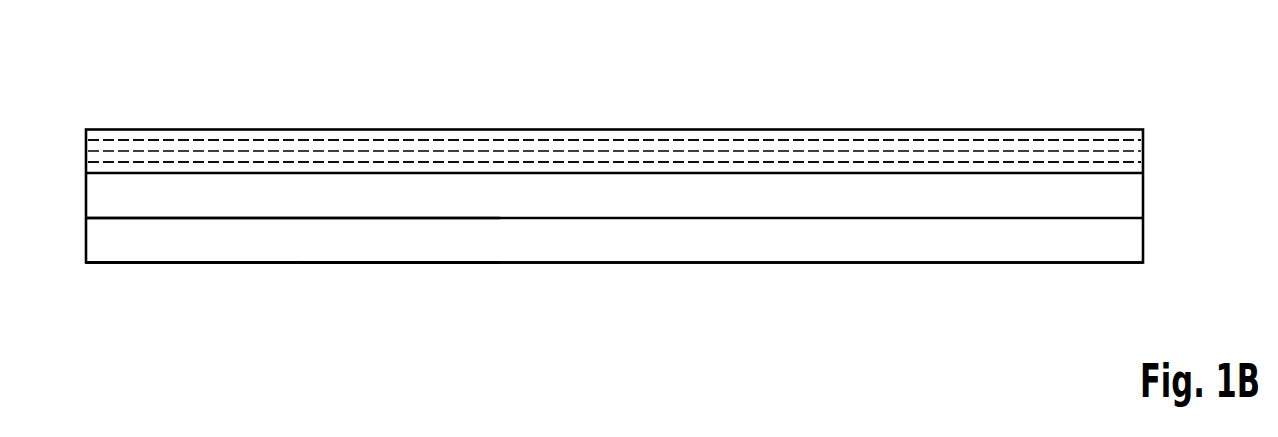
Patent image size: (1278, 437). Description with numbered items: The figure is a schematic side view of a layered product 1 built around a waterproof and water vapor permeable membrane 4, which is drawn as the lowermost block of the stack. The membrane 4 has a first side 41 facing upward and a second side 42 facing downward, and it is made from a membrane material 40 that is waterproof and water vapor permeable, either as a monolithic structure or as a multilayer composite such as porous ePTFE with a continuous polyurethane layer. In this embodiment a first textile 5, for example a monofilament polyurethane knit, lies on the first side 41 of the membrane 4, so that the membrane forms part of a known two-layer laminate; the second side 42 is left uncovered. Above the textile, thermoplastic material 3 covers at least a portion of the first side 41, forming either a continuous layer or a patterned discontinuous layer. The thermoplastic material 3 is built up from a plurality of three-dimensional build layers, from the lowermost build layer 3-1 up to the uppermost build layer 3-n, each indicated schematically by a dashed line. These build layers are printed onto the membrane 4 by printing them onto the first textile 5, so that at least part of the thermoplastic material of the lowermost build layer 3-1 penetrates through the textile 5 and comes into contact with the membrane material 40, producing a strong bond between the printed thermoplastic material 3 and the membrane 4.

The layered product 1 is at (82, 75).
The thermoplastic material 3 is at (110, 190).
The three-dimensional build layer 3-n is at (1143, 133).
The lowermost three-dimensional build layer 3-1 is at (1143, 168).
The first textile 5 is at (86, 193).
The waterproof and water vapor permeable membrane 4 is at (86, 238).
The first side 41 is at (276, 220).
The membrane material 40 is at (341, 238).
The second side 42 is at (388, 263).